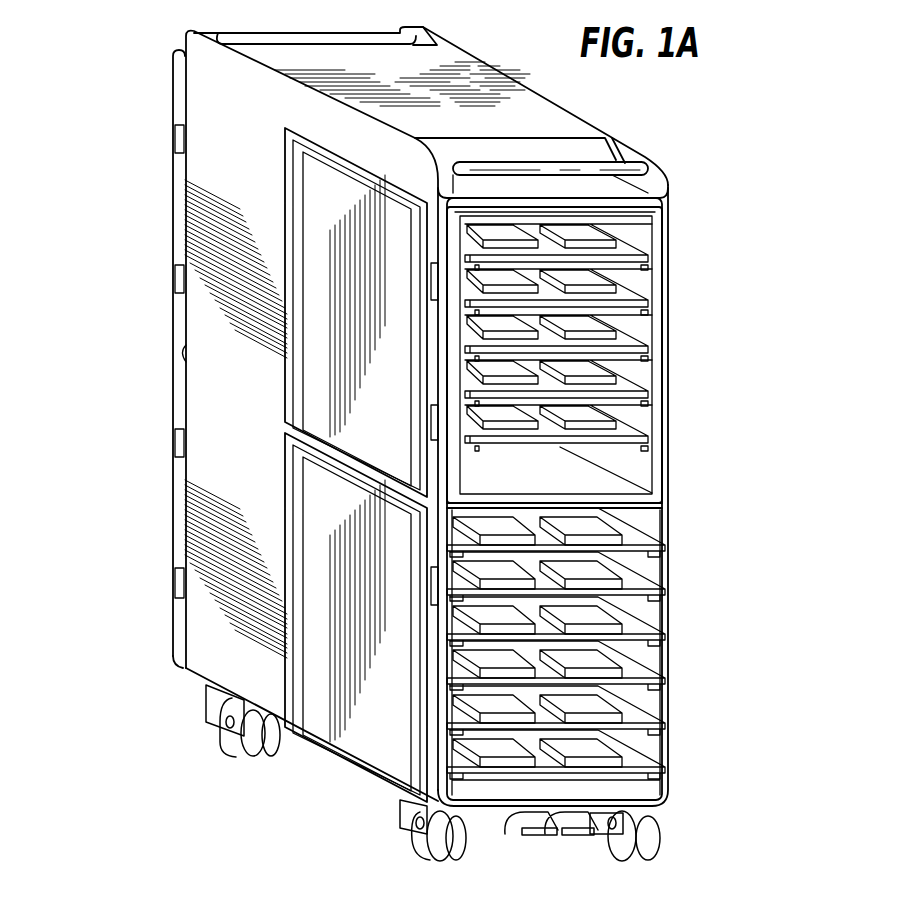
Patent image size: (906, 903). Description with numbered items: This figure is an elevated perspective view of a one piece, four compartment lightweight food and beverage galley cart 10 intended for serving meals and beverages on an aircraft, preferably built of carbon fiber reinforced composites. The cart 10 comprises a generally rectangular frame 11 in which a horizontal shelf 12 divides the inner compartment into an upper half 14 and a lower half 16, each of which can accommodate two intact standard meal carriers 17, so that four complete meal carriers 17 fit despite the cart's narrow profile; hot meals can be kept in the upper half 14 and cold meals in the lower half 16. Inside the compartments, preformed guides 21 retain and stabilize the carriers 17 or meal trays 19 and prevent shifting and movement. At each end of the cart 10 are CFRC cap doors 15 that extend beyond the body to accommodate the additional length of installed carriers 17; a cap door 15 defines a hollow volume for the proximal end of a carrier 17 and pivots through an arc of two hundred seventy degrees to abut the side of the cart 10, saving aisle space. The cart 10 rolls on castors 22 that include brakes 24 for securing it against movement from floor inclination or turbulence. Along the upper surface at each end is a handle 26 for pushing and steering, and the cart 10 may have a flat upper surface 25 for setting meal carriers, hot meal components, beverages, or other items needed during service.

The galley cart 10 is at (136, 372).
The frame 11 is at (178, 525).
The horizontal shelf 12 is at (658, 505).
The upper half 14 is at (670, 377).
The cap door 15 is at (178, 221).
The lower half 16 is at (670, 687).
The meal carrier 17 is at (662, 418).
The meal tray 19 is at (630, 717).
The preformed guide 21 is at (646, 268).
The castor 22 is at (238, 752).
The brake 24 is at (532, 835).
The flat upper surface 25 is at (556, 118).
The handle 26 is at (622, 163).